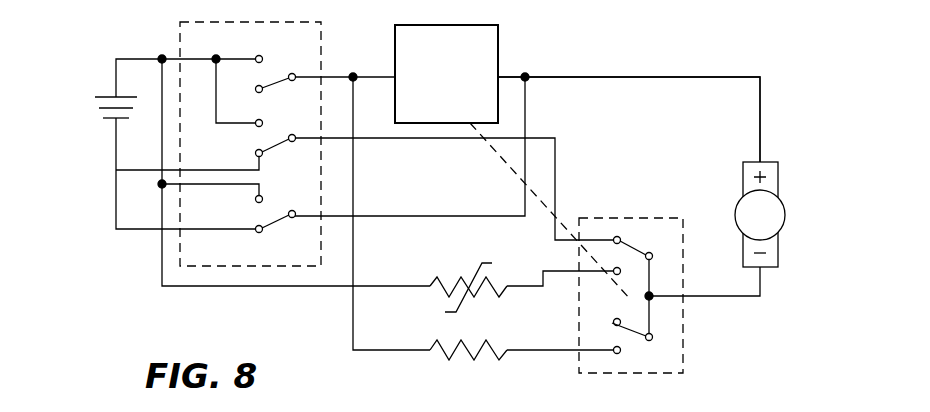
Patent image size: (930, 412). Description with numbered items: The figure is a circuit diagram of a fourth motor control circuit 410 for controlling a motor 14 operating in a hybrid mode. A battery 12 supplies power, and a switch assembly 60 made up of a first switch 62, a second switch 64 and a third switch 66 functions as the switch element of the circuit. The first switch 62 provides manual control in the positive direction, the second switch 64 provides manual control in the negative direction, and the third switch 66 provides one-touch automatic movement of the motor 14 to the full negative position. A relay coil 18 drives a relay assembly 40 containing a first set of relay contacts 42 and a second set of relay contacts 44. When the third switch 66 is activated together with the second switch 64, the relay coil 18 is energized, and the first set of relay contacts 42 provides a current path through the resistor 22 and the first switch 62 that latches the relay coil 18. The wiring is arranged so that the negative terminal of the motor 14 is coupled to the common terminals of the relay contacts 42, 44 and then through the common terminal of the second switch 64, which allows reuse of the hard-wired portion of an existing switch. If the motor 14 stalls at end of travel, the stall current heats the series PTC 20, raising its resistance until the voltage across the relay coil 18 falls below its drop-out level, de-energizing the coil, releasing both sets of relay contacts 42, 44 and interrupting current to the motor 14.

The battery 12 is at (106, 96).
The motor 14 is at (748, 226).
The relay coil 18 is at (434, 110).
The PTC 20 is at (440, 289).
The resistor 22 is at (466, 357).
The relay assembly 40 is at (625, 218).
The first set of relay contacts 42 is at (632, 247).
The second set of relay contacts 44 is at (636, 332).
The switch assembly 60 is at (219, 53).
The first switch 62 is at (275, 223).
The second switch 64 is at (275, 143).
The third switch 66 is at (276, 85).
The fourth motor control circuit 410 is at (718, 55).